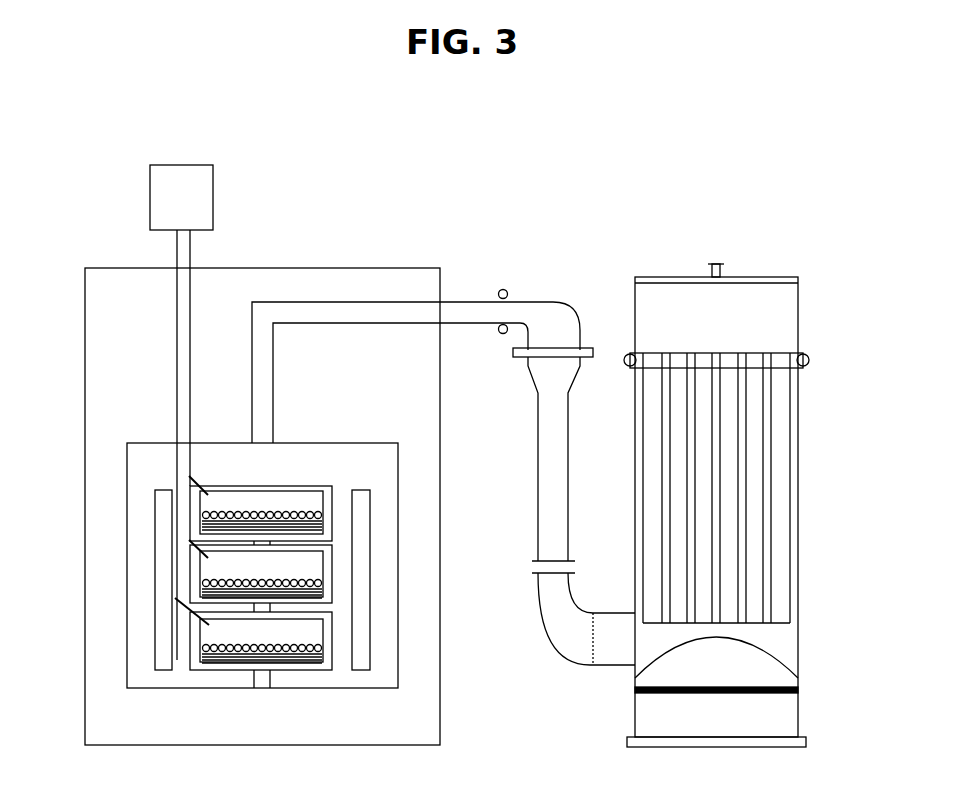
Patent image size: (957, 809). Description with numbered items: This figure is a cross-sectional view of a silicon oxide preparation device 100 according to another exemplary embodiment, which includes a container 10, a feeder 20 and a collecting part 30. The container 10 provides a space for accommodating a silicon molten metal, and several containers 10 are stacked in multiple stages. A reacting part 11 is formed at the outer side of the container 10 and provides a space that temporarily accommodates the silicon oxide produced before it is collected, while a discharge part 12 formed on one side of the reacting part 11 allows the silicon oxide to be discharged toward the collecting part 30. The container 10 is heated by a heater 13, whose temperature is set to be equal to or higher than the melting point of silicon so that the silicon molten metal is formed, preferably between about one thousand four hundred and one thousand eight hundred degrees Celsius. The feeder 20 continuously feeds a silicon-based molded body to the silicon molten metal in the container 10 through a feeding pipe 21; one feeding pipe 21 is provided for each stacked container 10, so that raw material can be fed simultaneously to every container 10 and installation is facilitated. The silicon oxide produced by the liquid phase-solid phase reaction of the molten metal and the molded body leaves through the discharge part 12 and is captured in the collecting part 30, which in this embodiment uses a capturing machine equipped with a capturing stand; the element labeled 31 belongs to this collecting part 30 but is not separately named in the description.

The silicon oxide preparation device 100 is at (70, 183).
The feeder 20 is at (150, 193).
The reacting part 11 is at (127, 464).
The discharge part 12 is at (273, 370).
The heater 13 is at (163, 511).
The container 10 is at (193, 527).
The feeding pipe 21 is at (206, 491).
The collecting part 30 is at (797, 318).
The filter tubes 31 is at (790, 505).